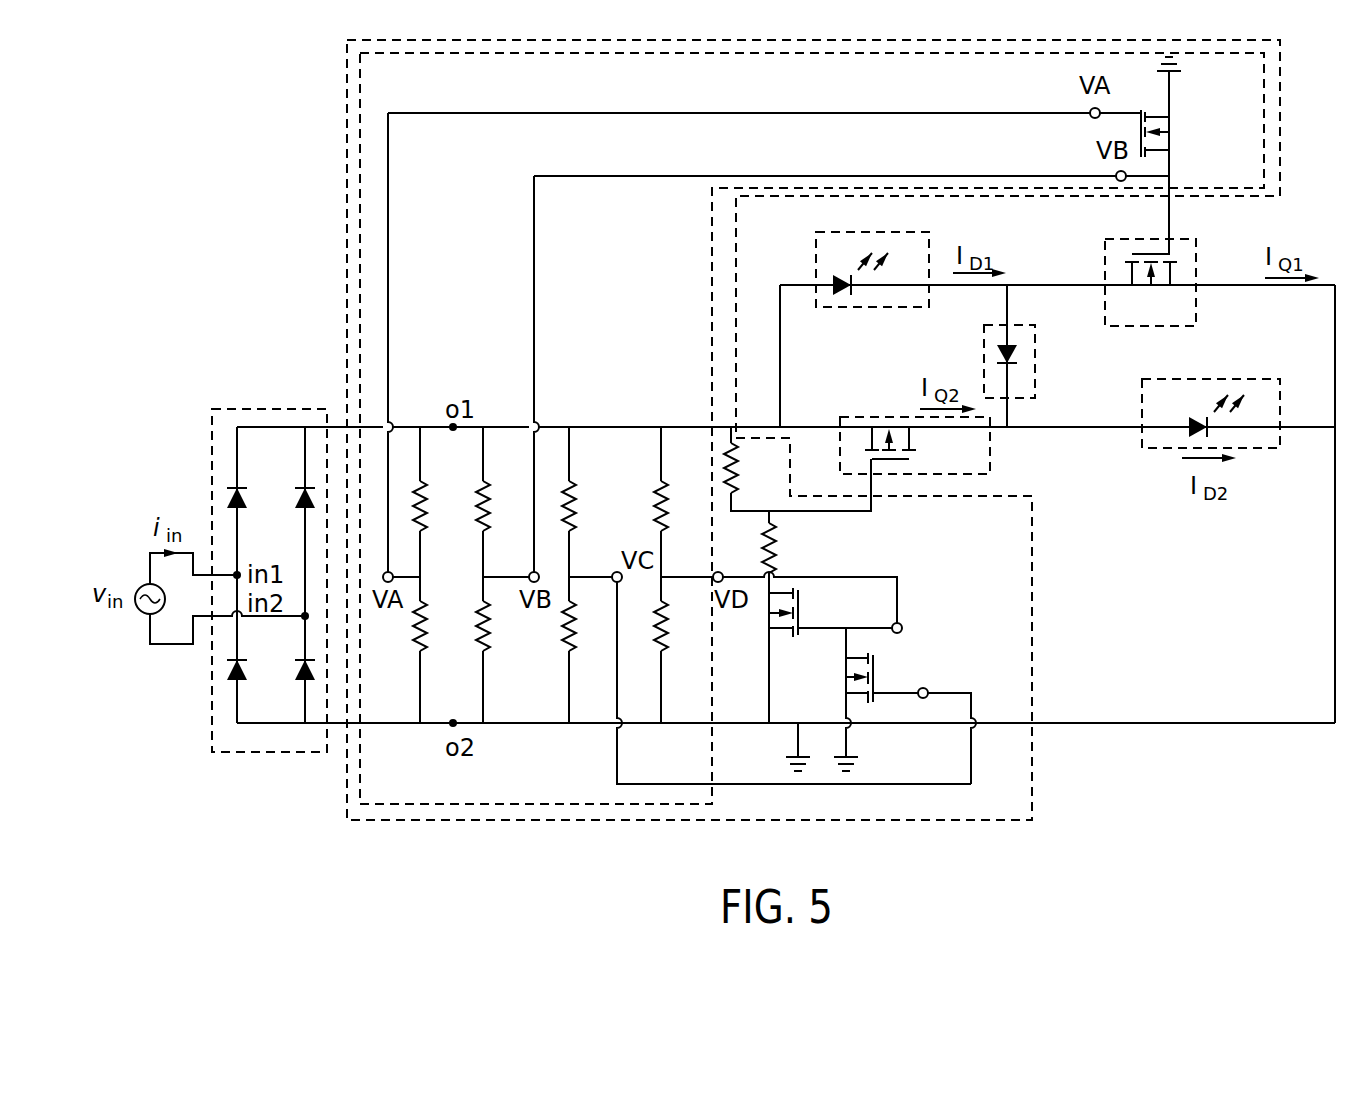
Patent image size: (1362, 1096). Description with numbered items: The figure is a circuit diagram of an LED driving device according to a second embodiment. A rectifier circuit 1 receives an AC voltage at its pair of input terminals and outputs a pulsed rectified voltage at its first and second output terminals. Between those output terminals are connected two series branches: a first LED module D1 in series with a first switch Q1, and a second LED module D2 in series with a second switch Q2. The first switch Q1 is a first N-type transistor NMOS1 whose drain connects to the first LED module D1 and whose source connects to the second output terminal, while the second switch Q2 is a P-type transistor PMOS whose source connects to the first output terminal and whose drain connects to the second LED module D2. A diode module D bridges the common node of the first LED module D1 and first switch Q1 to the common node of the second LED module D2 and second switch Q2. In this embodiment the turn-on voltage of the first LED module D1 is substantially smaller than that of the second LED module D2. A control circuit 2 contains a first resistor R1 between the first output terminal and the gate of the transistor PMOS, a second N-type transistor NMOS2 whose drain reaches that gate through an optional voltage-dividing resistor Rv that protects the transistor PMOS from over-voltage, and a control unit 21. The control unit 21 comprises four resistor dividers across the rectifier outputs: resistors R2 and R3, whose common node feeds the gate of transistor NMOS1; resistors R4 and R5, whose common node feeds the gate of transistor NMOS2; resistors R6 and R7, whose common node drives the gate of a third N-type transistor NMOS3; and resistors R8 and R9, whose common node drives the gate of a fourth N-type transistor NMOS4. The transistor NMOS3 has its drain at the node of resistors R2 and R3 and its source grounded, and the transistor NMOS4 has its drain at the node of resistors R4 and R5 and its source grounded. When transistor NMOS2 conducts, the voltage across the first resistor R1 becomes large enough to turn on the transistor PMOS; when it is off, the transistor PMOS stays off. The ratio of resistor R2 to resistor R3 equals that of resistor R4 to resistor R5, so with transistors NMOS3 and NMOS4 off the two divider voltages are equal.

The rectifier circuit 1 is at (284, 407).
The control circuit 2 is at (1043, 793).
The control unit 21 is at (525, 806).
The first LED module D1 is at (836, 311).
The second LED module D2 is at (1258, 378).
The diode module D is at (1038, 362).
The first switch Q1 is at (1205, 243).
The second switch Q2 is at (993, 453).
The first N-type metal oxide semiconductor field effect transistor NMOS1 is at (1150, 198).
The second N-type metal oxide semiconductor field effect transistor NMOS2 is at (828, 612).
The third N-type metal oxide semiconductor field effect transistor NMOS3 is at (1194, 107).
The fourth N-type metal oxide semiconductor field effect transistor NMOS4 is at (911, 706).
The P-type metal oxide semiconductor field effect transistor PMOS is at (915, 445).
The first resistor R1 is at (797, 469).
The second resistor R2 is at (502, 506).
The third resistor R3 is at (502, 626).
The fourth resistor R4 is at (680, 506).
The fifth resistor R5 is at (680, 626).
The sixth resistor R6 is at (439, 506).
The seventh resistor R7 is at (439, 626).
The eighth resistor R8 is at (588, 506).
The ninth resistor R9 is at (588, 626).
The voltage-dividing resistor Rv is at (787, 617).